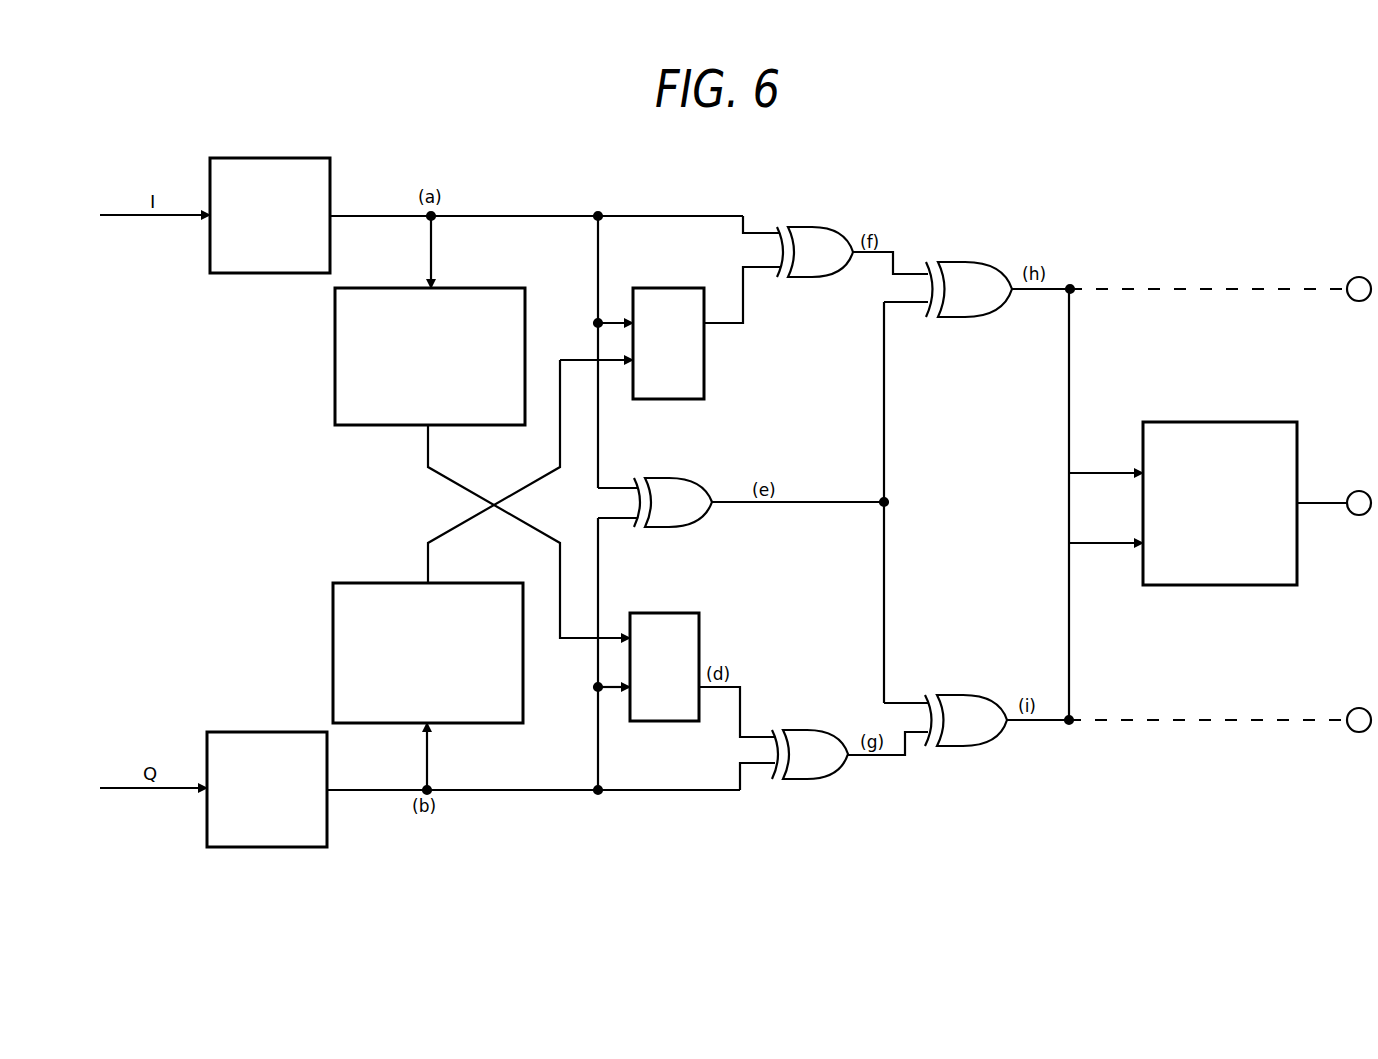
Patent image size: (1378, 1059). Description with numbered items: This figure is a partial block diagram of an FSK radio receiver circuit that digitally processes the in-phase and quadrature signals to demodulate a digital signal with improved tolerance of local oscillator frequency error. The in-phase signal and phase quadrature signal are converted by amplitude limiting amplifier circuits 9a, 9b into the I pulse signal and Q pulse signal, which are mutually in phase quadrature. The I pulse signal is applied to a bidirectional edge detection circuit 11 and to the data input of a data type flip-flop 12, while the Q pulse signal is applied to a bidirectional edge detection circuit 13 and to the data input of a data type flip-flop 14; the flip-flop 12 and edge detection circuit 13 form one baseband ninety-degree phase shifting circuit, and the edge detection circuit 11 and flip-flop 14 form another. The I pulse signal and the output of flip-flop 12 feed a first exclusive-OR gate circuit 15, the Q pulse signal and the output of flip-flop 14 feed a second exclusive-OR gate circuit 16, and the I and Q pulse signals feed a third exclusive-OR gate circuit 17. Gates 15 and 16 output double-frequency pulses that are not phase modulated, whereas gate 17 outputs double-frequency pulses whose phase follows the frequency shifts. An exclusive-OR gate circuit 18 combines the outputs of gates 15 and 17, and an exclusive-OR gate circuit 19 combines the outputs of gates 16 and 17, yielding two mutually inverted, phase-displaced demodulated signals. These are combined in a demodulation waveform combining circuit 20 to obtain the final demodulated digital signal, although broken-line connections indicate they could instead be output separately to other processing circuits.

The amplitude limiting amplifier circuit 9a is at (304, 158).
The amplitude limiting amplifier circuit 9b is at (297, 732).
The bidirectional edge detection circuit 11 is at (502, 288).
The data type flip-flop 12 is at (687, 288).
The bidirectional edge detection circuit 13 is at (500, 583).
The data type flip-flop 14 is at (685, 613).
The first exclusive-OR gate circuit 15 is at (825, 227).
The second exclusive-OR gate circuit 16 is at (825, 730).
The third exclusive-OR gate circuit 17 is at (685, 478).
The exclusive-OR gate circuit 18 is at (977, 262).
The exclusive-OR gate circuit 19 is at (977, 695).
The demodulation waveform combining circuit 20 is at (1269, 422).